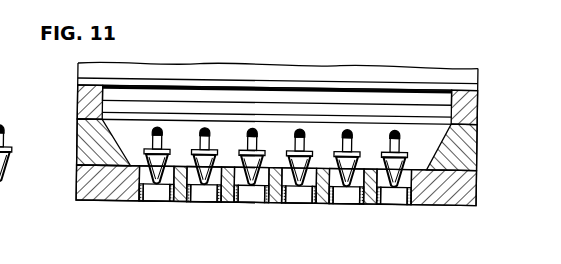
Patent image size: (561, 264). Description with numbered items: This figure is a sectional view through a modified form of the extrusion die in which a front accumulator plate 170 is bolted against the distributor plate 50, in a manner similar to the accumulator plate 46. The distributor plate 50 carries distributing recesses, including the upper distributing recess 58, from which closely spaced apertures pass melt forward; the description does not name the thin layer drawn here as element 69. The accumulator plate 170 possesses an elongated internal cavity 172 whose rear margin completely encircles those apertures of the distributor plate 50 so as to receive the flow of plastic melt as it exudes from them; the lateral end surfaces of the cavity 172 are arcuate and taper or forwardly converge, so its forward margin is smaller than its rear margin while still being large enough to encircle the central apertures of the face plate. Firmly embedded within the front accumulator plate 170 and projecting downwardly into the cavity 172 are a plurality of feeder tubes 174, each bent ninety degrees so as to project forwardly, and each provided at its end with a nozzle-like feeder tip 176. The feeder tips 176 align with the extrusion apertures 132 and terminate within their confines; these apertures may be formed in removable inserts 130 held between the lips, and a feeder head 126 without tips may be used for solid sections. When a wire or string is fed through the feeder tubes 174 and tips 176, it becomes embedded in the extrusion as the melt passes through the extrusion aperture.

The rear accumulator plate 46 is at (478, 64).
The distributor plate 50 is at (78, 102).
The upper distributing recess 58 is at (188, 104).
The insulating layer 69 is at (278, 84).
The feeder head 126 is at (478, 92).
The removable insert 130 is at (144, 202).
The extrusion aperture 132 is at (302, 199).
The front accumulator plate 170 is at (480, 158).
The internal cavity 172 is at (428, 130).
The feeder tube 174 is at (156, 137).
The feeder tip 176 is at (214, 193).